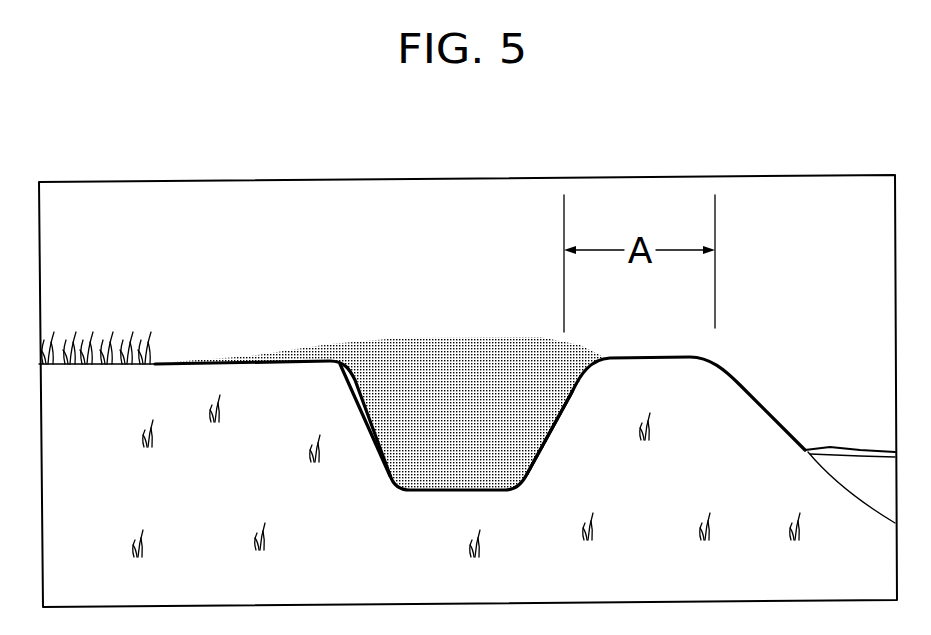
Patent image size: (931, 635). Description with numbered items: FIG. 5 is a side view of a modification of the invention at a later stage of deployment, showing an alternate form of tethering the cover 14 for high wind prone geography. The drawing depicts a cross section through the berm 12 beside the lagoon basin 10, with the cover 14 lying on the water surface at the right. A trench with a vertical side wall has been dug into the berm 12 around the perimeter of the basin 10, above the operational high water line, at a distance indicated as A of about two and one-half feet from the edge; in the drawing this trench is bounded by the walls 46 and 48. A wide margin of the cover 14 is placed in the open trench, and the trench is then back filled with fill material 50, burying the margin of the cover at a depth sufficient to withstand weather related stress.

The lagoon basin 10 is at (876, 480).
The berm 12 is at (515, 542).
The cover 14 is at (860, 440).
The first trench wall 46 is at (406, 462).
The second trench wall 48 is at (562, 425).
The fill material 50 is at (423, 363).